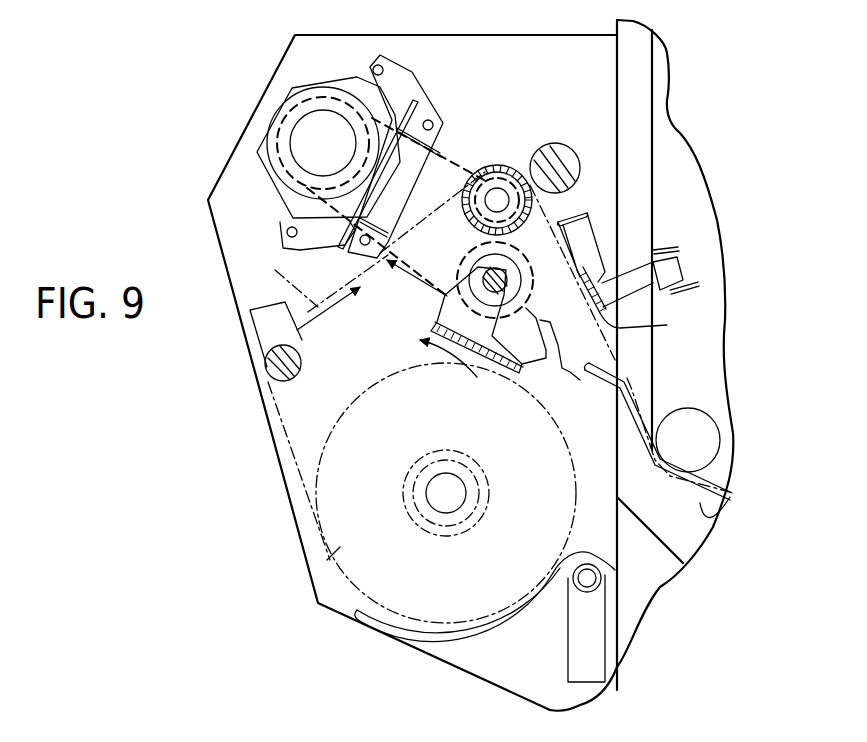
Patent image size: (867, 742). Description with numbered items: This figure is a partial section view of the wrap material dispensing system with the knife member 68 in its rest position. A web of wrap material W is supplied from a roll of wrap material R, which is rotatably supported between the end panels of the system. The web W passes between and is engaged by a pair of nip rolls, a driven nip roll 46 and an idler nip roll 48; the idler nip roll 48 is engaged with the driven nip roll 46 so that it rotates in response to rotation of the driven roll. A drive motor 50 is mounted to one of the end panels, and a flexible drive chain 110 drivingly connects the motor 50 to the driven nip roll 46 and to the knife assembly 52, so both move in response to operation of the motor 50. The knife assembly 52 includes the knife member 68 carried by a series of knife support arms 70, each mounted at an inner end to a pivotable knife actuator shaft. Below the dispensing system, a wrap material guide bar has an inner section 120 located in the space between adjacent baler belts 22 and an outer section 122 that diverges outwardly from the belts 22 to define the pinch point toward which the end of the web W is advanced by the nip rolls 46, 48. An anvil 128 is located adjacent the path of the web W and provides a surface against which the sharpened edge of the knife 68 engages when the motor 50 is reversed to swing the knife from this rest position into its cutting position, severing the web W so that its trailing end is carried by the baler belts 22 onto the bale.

The baler belts 22 is at (735, 481).
The driven nip roll 46 is at (507, 168).
The idler nip roll 48 is at (580, 166).
The drive motor 50 is at (313, 76).
The knife assembly 52 is at (430, 300).
The knife member 68 is at (558, 370).
The knife support arms 70 is at (437, 313).
The drive chain 110 is at (450, 152).
The guide bar inner section 120 is at (700, 505).
The guide bar outer section 122 is at (620, 449).
The anvil 128 is at (660, 325).
The web of wrap material W is at (672, 375).
The roll of wrap material R is at (330, 562).